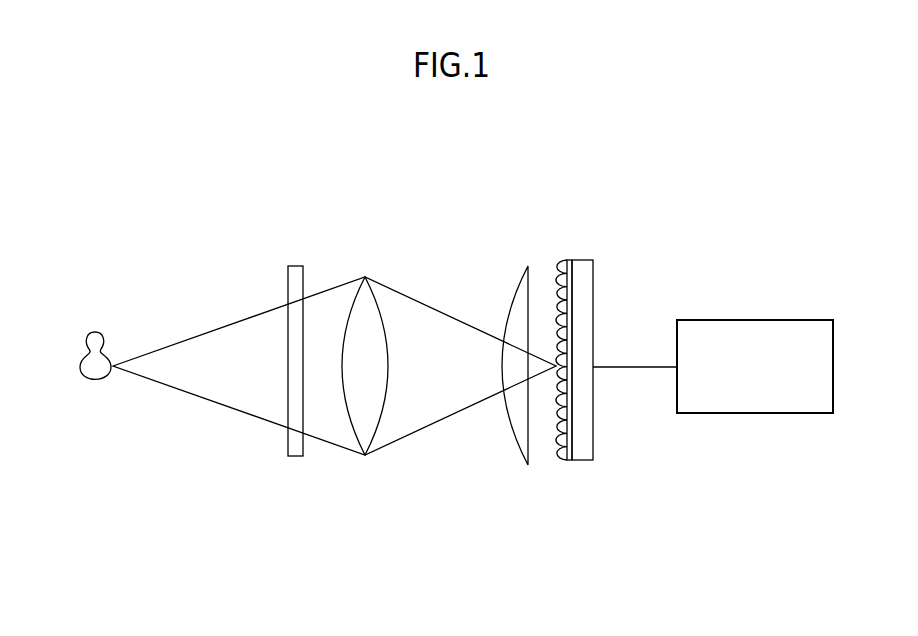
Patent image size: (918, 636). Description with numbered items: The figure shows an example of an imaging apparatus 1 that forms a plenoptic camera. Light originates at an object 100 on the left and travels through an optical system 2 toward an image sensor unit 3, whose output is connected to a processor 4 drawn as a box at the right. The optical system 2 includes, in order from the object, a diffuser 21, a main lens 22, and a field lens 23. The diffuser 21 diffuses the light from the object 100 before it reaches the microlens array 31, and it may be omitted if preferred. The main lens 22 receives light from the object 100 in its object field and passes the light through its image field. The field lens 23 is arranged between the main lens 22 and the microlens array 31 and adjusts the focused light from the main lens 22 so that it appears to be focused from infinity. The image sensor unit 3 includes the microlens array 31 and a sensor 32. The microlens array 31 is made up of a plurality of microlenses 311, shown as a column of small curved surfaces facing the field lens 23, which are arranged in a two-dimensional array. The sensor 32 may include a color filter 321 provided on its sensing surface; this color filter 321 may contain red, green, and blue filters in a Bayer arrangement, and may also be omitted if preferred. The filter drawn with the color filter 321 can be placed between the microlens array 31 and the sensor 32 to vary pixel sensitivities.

The imaging apparatus 1 is at (492, 171).
The object 100 is at (95, 332).
The optical system 2 is at (366, 246).
The diffuser 21 is at (296, 266).
The main lens 22 is at (368, 428).
The field lens 23 is at (518, 443).
The image sensor unit 3 is at (574, 249).
The microlens array 31 is at (568, 462).
The microlens 311 is at (556, 282).
The sensor 32 is at (585, 447).
The color filter 321 is at (572, 462).
The processor 4 is at (755, 320).